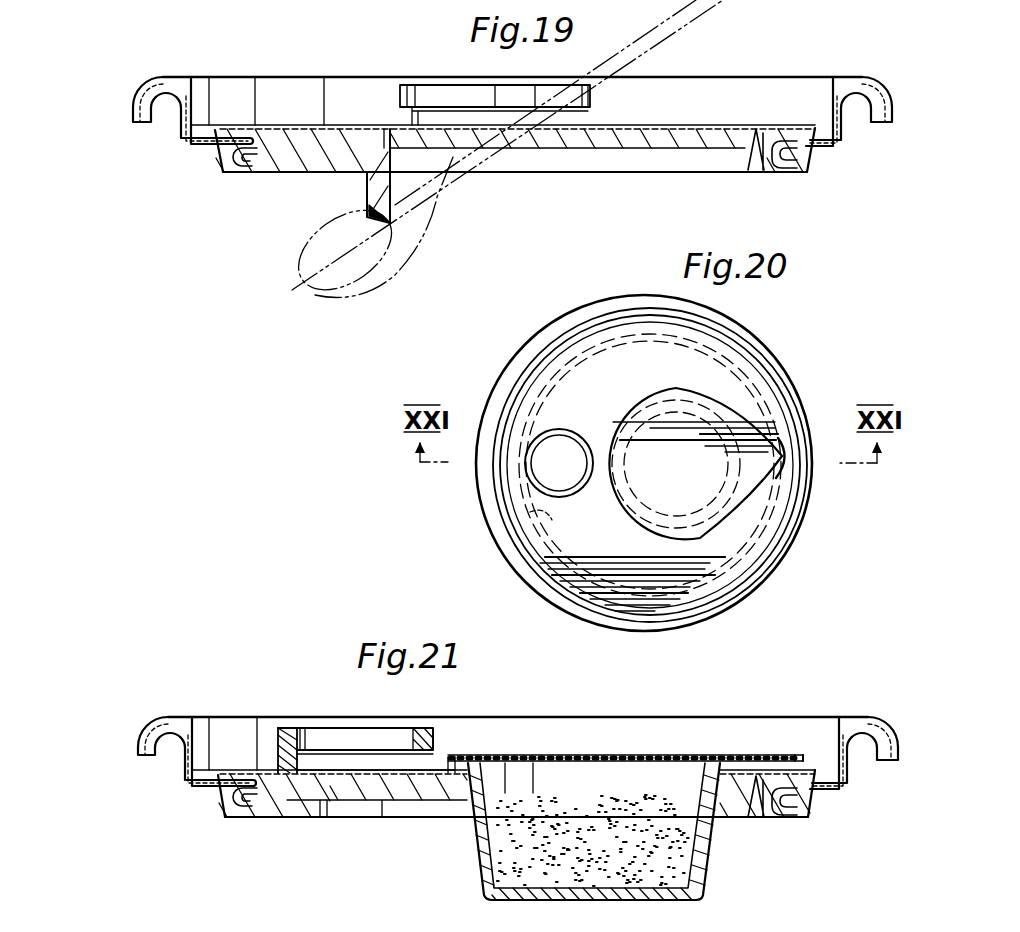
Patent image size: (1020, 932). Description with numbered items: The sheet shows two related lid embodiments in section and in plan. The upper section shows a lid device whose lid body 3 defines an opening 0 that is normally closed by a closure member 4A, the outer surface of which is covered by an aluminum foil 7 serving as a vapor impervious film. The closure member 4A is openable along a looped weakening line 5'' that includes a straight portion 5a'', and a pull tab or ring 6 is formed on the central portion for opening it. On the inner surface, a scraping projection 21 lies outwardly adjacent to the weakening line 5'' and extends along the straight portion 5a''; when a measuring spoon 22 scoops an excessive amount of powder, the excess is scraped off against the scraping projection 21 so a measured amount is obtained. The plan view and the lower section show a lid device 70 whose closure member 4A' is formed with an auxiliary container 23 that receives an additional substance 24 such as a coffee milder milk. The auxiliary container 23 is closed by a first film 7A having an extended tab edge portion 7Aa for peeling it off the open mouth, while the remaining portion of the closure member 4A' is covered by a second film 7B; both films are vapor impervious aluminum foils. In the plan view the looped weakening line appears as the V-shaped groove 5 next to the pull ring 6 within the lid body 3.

In FIG. 19, the lid body 3 is at (179, 139).
In FIG. 20, the lid body 3 is at (517, 582).
In FIG. 21, the lid body 3 is at (182, 778).
In FIG. 19, the aluminum foil 7 is at (283, 124).
In FIG. 19, the straight portion 5a'' is at (388, 87).
In FIG. 19, the pull tab or ring 6 is at (551, 92).
In FIG. 20, the pull tab or ring 6 is at (543, 430).
In FIG. 21, the pull tab or ring 6 is at (353, 737).
In FIG. 19, the measuring spoon 22 is at (700, 26).
In FIG. 19, the scraping projection 21 is at (366, 189).
In FIG. 19, the closure member 4A is at (503, 176).
In FIG. 19, the looped weakening line 5'' is at (728, 176).
In FIG. 19, the opening 0 is at (776, 168).
In FIG. 21, the opening 0 is at (776, 815).
In FIG. 20, the lid device 70 is at (545, 323).
In FIG. 20, the first film 7A is at (757, 423).
In FIG. 21, the first film 7A is at (578, 756).
In FIG. 20, the extended tab edge portion 7Aa is at (760, 484).
In FIG. 21, the extended tab edge portion 7Aa is at (783, 757).
In FIG. 20, the second film 7B is at (733, 581).
In FIG. 21, the second film 7B is at (432, 769).
In FIG. 20, the V-shaped groove 5 is at (600, 465).
In FIG. 21, the V-shaped groove 5 is at (256, 834).
In FIG. 21, the closure member 4A' is at (503, 825).
In FIG. 21, the additional substance 24 is at (507, 853).
In FIG. 21, the auxiliary container 23 is at (657, 893).